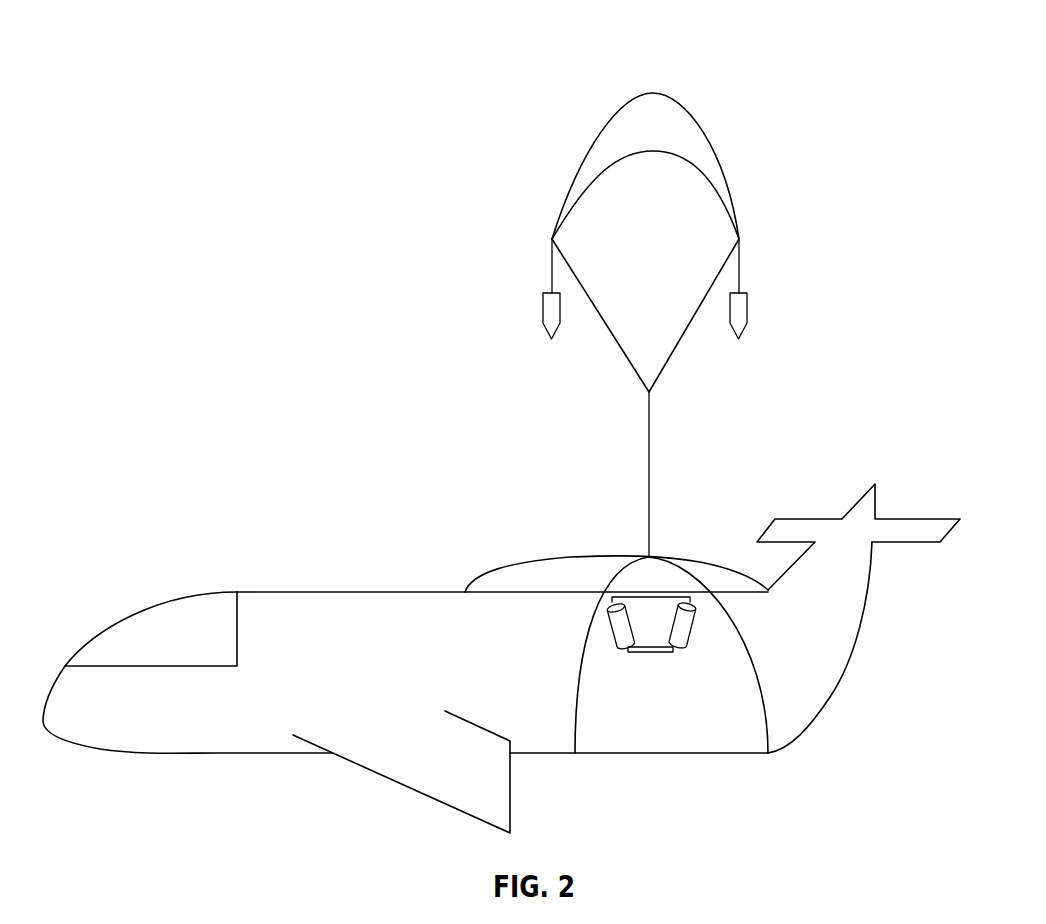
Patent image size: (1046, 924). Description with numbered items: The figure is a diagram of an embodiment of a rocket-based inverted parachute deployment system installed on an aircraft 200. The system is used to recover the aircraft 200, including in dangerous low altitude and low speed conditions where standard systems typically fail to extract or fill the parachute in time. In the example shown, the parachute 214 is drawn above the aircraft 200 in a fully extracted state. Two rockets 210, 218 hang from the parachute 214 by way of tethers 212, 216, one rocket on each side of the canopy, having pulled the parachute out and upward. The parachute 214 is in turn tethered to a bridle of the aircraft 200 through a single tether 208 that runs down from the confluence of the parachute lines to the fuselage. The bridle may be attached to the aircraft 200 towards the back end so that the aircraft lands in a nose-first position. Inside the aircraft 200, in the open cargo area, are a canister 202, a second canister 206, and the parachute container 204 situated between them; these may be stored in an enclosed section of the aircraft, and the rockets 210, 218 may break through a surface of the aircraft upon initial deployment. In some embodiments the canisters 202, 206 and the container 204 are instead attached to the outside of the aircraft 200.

The aircraft 200 is at (277, 757).
The canister 202 is at (623, 652).
The parachute container 204 is at (657, 652).
The canister 206 is at (680, 652).
The tether 208 is at (647, 468).
The rocket 210 is at (543, 313).
The tether 212 is at (552, 258).
The parachute 214 is at (644, 108).
The tether 216 is at (740, 268).
The rocket 218 is at (747, 313).